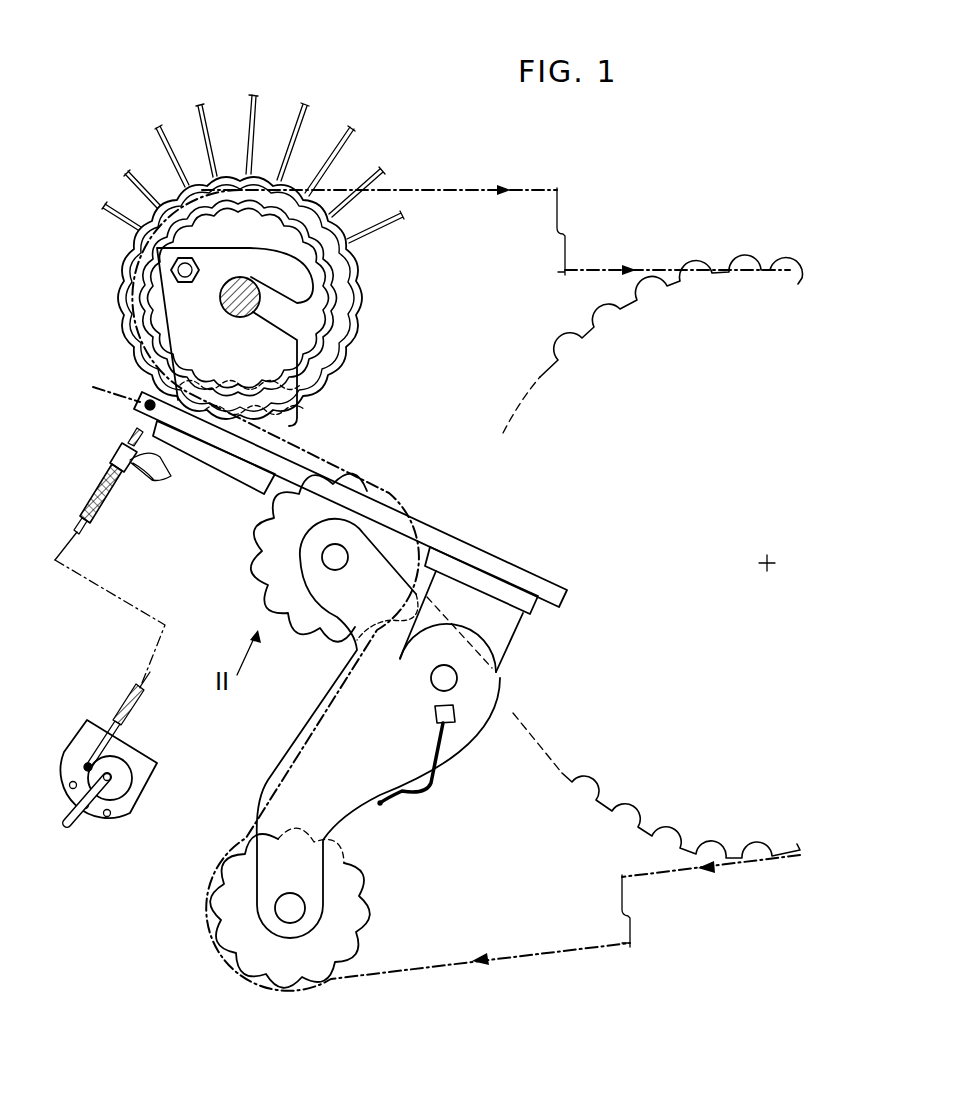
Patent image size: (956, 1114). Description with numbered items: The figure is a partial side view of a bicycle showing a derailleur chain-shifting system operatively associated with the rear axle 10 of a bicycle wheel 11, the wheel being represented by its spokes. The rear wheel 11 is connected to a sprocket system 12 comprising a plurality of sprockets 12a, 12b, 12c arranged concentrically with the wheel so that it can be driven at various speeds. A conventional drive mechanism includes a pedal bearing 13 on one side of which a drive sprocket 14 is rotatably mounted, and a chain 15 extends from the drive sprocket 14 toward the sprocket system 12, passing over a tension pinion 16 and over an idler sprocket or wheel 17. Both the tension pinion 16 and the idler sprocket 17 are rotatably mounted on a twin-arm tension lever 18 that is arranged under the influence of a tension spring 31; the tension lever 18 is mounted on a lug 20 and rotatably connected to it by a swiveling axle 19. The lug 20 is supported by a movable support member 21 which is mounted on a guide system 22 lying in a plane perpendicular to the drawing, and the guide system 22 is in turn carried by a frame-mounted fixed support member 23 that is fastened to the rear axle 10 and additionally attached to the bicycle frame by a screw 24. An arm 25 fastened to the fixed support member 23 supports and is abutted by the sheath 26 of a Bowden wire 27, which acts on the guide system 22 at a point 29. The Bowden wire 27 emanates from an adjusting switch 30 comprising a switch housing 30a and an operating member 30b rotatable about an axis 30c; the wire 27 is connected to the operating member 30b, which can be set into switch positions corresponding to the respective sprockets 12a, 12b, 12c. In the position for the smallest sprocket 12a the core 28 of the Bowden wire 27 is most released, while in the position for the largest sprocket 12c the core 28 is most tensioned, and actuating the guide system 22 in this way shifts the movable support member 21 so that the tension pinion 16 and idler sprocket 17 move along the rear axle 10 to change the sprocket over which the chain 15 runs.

The rear axle 10 is at (232, 308).
The bicycle wheel 11 is at (247, 122).
The sprocket system 12 is at (367, 324).
The smallest sprocket 12a is at (287, 240).
The sprocket 12b is at (348, 299).
The largest sprocket 12c is at (343, 352).
The pedal bearing 13 is at (760, 570).
The drive sprocket 14 is at (630, 340).
The chain 15 is at (488, 188).
The tension pinion 16 is at (353, 915).
The idler sprocket 17 is at (365, 482).
The twin-arm tension lever 18 is at (347, 800).
The swiveling axle 19 is at (440, 682).
The lug 20 is at (497, 647).
The movable support member 21 is at (536, 608).
The guide system 22 is at (447, 543).
The fixed support member 23 is at (290, 427).
The screw 24 is at (170, 268).
The arm 25 is at (157, 478).
The sheath 26 is at (97, 514).
The Bowden wire 27 is at (88, 498).
The core 28 is at (130, 437).
The point 29 is at (142, 403).
The adjusting switch 30 is at (152, 752).
The switch housing 30a is at (157, 765).
The operating member 30b is at (67, 825).
The axis 30c is at (115, 780).
The tension spring 31 is at (417, 794).